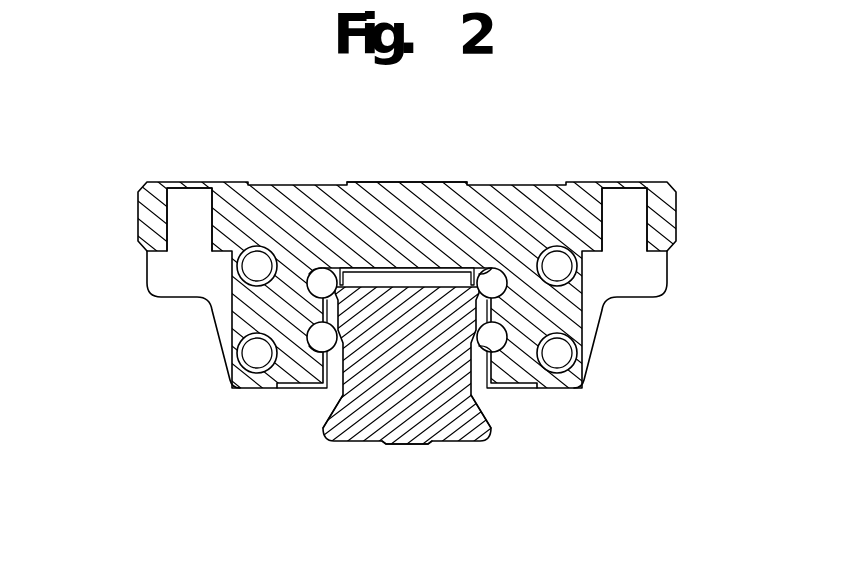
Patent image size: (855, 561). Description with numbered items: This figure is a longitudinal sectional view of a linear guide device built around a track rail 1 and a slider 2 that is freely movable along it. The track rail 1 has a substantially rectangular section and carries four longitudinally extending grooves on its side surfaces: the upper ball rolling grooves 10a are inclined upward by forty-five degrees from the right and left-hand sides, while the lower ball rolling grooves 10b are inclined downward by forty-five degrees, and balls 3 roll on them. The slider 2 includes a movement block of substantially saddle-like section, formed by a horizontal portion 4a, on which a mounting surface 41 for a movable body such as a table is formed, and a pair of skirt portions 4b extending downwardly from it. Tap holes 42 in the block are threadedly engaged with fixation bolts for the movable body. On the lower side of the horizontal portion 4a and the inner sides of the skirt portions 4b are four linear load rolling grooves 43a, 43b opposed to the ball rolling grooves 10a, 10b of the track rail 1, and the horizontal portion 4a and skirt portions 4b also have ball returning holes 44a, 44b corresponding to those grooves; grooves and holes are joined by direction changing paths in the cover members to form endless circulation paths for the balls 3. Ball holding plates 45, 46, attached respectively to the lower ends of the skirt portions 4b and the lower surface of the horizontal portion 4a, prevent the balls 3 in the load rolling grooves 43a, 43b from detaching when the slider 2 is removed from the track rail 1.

The track rail 1 is at (410, 420).
The slider 2 is at (132, 214).
The balls 3 is at (310, 343).
The horizontal portion 4a is at (367, 207).
The skirt portions 4b is at (242, 389).
The ball rolling grooves 10a is at (338, 290).
The ball rolling grooves 10b is at (342, 402).
The mounting surface 41 is at (397, 182).
The tap holes 42 is at (170, 216).
The load rolling grooves 43a is at (317, 262).
The load rolling grooves 43b is at (290, 358).
The ball returning holes 44a is at (251, 268).
The ball returning holes 44b is at (253, 350).
The ball holding plate 45 is at (297, 388).
The ball holding plate 46 is at (463, 266).